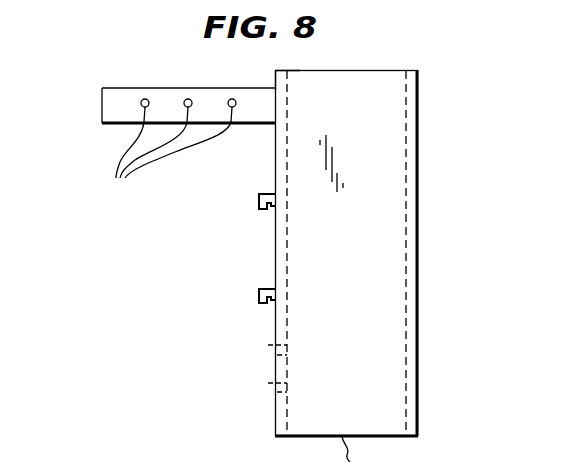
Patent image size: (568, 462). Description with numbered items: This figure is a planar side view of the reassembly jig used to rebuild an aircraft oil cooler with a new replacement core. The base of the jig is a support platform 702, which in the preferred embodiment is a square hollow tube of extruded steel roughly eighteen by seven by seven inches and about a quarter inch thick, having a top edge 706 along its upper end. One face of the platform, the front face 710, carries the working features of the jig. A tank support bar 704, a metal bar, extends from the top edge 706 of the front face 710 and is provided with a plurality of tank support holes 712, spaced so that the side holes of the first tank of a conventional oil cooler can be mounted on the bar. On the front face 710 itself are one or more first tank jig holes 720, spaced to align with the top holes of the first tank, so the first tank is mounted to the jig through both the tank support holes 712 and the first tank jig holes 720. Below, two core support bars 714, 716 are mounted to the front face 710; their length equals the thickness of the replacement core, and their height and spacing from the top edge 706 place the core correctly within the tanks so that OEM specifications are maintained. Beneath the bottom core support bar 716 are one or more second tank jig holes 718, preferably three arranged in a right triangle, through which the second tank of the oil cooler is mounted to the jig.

The support platform 702 is at (380, 178).
The tank support bar 704 is at (134, 88).
The top edge 706 is at (411, 70).
The front face 710 is at (275, 80).
The tank support holes 712 is at (169, 153).
The core support bar 714 is at (258, 203).
The core support bar 716 is at (258, 297).
The second tank jig holes 718 is at (262, 382).
The first tank jig holes 720 is at (275, 183).